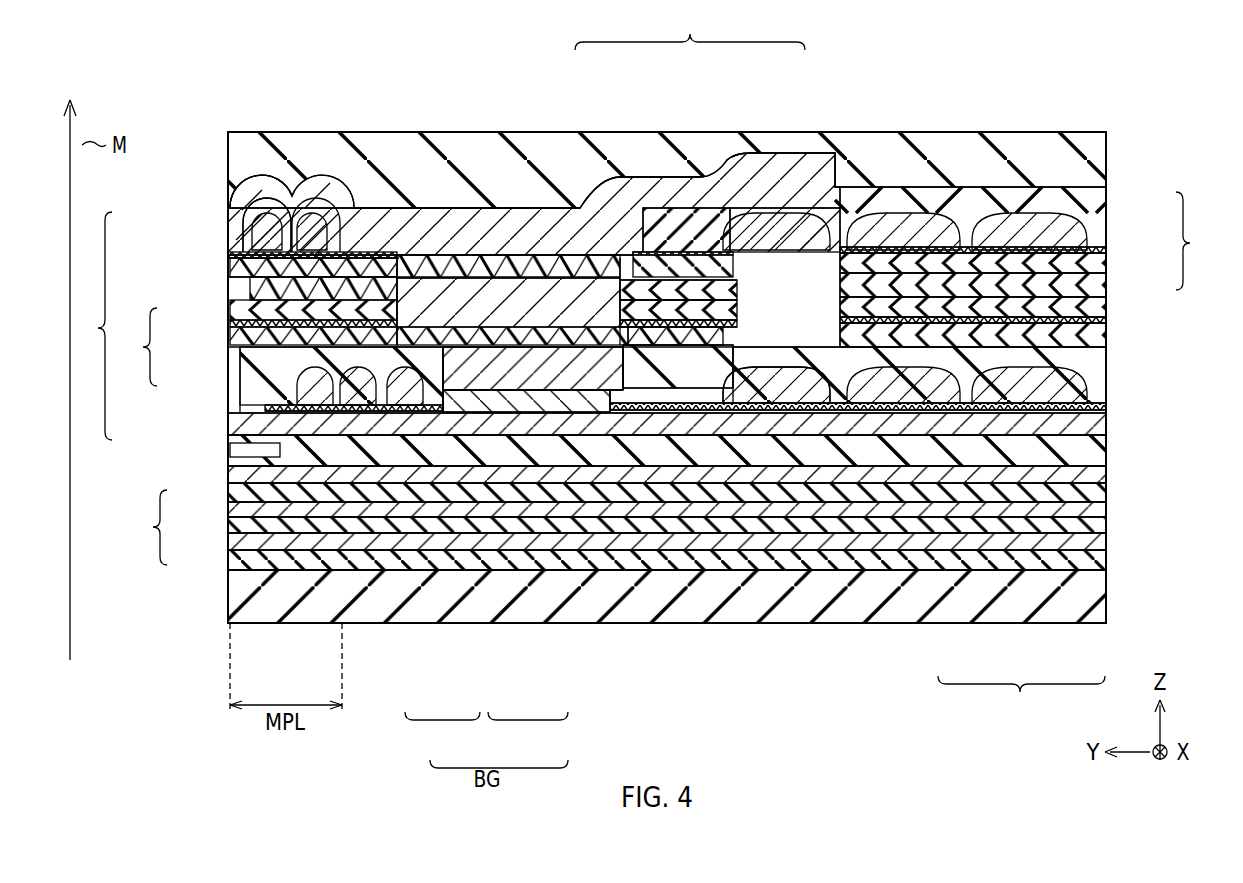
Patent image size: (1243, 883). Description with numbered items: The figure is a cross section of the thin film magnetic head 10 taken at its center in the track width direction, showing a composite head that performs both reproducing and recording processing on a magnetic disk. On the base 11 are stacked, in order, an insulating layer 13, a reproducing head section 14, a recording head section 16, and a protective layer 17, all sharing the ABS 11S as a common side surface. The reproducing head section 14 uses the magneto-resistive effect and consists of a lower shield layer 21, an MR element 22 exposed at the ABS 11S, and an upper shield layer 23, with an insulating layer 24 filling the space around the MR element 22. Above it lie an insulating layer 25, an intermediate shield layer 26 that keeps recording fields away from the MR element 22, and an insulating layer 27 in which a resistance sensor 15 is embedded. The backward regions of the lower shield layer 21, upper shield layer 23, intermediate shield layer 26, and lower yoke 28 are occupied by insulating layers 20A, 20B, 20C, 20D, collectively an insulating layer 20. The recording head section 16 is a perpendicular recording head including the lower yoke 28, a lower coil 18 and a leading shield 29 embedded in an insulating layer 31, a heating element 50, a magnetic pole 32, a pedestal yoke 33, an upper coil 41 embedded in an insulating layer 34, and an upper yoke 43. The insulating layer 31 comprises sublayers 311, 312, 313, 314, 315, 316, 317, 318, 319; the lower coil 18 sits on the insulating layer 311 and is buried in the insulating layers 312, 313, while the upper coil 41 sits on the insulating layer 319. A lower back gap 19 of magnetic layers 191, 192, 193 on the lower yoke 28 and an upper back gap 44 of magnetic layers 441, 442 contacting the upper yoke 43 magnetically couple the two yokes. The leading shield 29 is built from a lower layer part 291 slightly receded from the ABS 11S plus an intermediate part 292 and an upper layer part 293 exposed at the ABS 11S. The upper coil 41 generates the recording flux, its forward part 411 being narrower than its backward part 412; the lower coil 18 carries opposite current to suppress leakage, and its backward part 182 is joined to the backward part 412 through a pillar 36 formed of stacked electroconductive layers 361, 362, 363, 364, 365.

The thin film magnetic head 10 is at (1008, 57).
The base 11 is at (258, 624).
The ABS 11S is at (226, 596).
The insulating layer 13 is at (322, 580).
The reproducing head section 14 is at (148, 527).
The resistance sensor 15 is at (240, 449).
The recording head section 16 is at (93, 326).
The protective layer 17 is at (1046, 131).
The lower coil 18 is at (780, 553).
The backward part of the lower coil 182 is at (800, 470).
The lower back gap 19 is at (667, 548).
The magnetic layer 191 is at (438, 470).
The magnetic layer 192 is at (455, 470).
The magnetic layer 193 is at (472, 400).
The insulating layer 20 is at (858, 559).
The insulating layer 20A is at (905, 455).
The insulating layer 20B is at (960, 440).
The insulating layer 20C is at (1000, 430).
The insulating layer 20D is at (1045, 440).
The lower shield layer 21 is at (240, 547).
The MR element 22 is at (240, 520).
The upper shield layer 23 is at (240, 496).
The insulating layer 24 is at (632, 560).
The insulating layer 25 is at (645, 470).
The intermediate shield layer 26 is at (660, 380).
The insulating layer 27 is at (735, 455).
The lower yoke 28 is at (245, 420).
The leading shield 29 is at (137, 347).
The lower layer part 291 is at (248, 360).
The intermediate part 292 is at (240, 330).
The upper layer part 293 is at (240, 312).
The insulating layer 31 is at (690, 130).
The insulating layer 311 is at (634, 290).
The insulating layer 312 is at (645, 300).
The insulating layer 313 is at (655, 320).
The insulating layer 314 is at (668, 340).
The insulating layer 315 is at (690, 350).
The insulating layer 316 is at (705, 300).
The insulating layer 317 is at (730, 255).
The insulating layer 318 is at (750, 255).
The insulating layer 319 is at (780, 210).
The magnetic pole 32 is at (240, 287).
The pedestal yoke 33 is at (245, 257).
The insulating layer 34 is at (318, 225).
The pillar 36 is at (1199, 241).
The electroconductive layer 361 is at (1107, 324).
The electroconductive layer 362 is at (1107, 305).
The electroconductive layer 363 is at (1107, 287).
The electroconductive layer 364 is at (1107, 264).
The electroconductive layer 365 is at (1107, 248).
The upper coil 41 is at (572, 130).
The forward part of the upper coil 411 is at (268, 190).
The backward part of the upper coil 412 is at (880, 210).
The upper yoke 43 is at (240, 216).
The upper back gap 44 is at (416, 577).
The magnetic layer 441 is at (500, 375).
The magnetic layer 442 is at (540, 400).
The heating element 50 is at (372, 330).